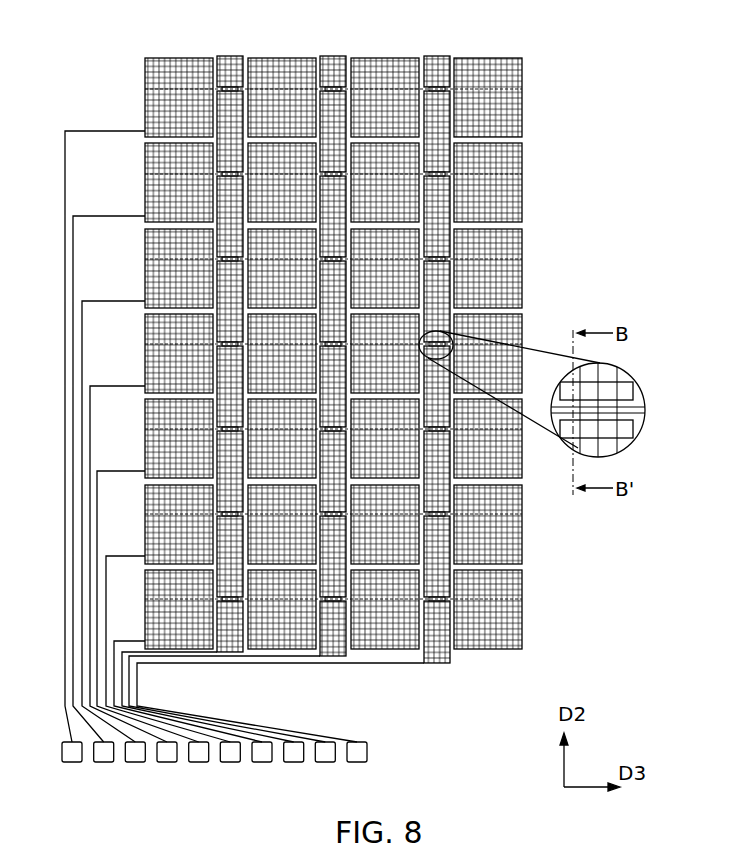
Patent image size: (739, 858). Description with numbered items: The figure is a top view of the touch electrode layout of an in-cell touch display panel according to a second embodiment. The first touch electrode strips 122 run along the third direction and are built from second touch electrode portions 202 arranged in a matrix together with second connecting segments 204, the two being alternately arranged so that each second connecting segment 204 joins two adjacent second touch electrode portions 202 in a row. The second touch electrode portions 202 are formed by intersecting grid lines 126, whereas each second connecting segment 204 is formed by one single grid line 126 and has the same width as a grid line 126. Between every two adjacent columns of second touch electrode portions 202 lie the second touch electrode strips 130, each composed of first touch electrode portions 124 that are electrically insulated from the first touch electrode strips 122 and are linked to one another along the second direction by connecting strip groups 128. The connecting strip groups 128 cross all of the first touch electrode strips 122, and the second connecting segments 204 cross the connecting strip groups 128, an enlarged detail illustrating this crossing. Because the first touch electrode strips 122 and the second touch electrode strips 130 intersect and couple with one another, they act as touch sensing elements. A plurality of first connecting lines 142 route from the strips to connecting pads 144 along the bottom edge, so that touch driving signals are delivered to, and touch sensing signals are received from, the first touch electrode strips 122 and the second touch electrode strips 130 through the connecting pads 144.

The first touch electrode strip 122 is at (533, 104).
The first touch electrode portion 124 is at (421, 55).
The grid line 126 is at (507, 68).
The connecting strip group 128 is at (628, 407).
The second touch electrode strip 130 is at (437, 53).
The first connecting line 142 is at (130, 300).
The connecting pad 144 is at (363, 753).
The second touch electrode portion 202 is at (500, 57).
The second connecting segment 204 is at (448, 87).